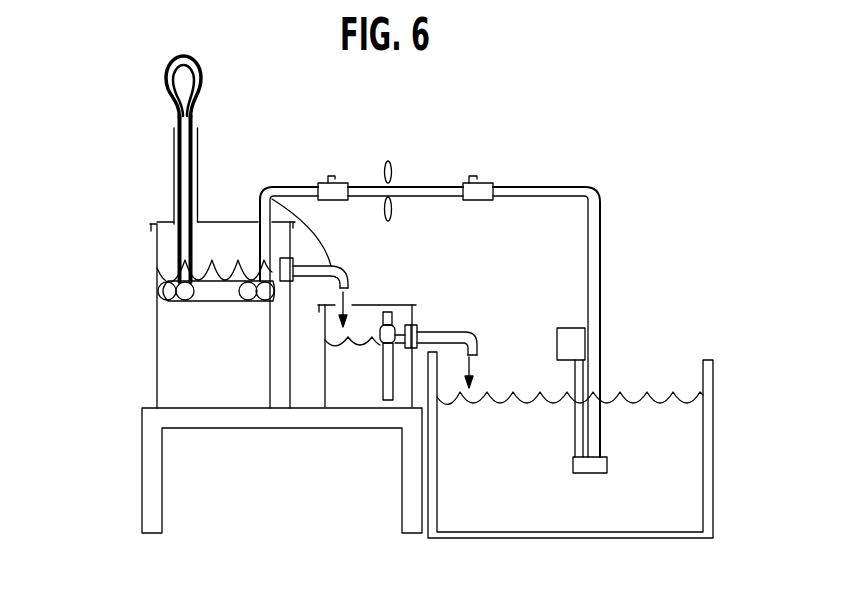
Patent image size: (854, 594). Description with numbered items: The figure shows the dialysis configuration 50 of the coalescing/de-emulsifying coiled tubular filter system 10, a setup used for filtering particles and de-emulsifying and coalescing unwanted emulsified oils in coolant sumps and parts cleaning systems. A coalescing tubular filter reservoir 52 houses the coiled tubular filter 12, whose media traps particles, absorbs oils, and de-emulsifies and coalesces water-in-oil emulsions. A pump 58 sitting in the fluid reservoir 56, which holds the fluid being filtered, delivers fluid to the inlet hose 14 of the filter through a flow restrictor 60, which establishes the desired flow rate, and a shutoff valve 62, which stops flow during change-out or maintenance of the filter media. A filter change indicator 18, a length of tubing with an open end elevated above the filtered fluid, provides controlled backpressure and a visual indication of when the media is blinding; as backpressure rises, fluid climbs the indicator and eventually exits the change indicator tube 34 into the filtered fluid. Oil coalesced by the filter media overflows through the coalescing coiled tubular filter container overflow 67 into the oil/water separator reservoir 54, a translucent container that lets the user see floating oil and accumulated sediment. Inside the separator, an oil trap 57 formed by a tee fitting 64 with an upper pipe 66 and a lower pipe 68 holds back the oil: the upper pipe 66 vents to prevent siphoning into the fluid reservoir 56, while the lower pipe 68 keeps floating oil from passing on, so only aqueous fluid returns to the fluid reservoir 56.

The coalescing/de-emulsifying coiled tubular filter system 10 is at (693, 243).
The coiled tubular filter 12 is at (203, 303).
The inlet hose 14 is at (258, 303).
The filter change indicator 18 is at (173, 147).
The bypass pressure relief tube 34 is at (203, 74).
The dialysis configuration 50 is at (322, 153).
The coalescing tubular filter reservoir 52 is at (172, 380).
The oil/water separator reservoir 54 is at (355, 395).
The fluid reservoir 56 is at (468, 518).
The oil trap 57 is at (437, 338).
The pump 58 is at (585, 468).
The flow restrictor 60 is at (393, 170).
The shutoff valve 62 is at (347, 183).
The tee fitting 64 is at (400, 333).
The upper pipe 66 is at (383, 312).
The coalescing coiled tubular filter container overflow 67 is at (262, 196).
The lower pipe 68 is at (392, 393).